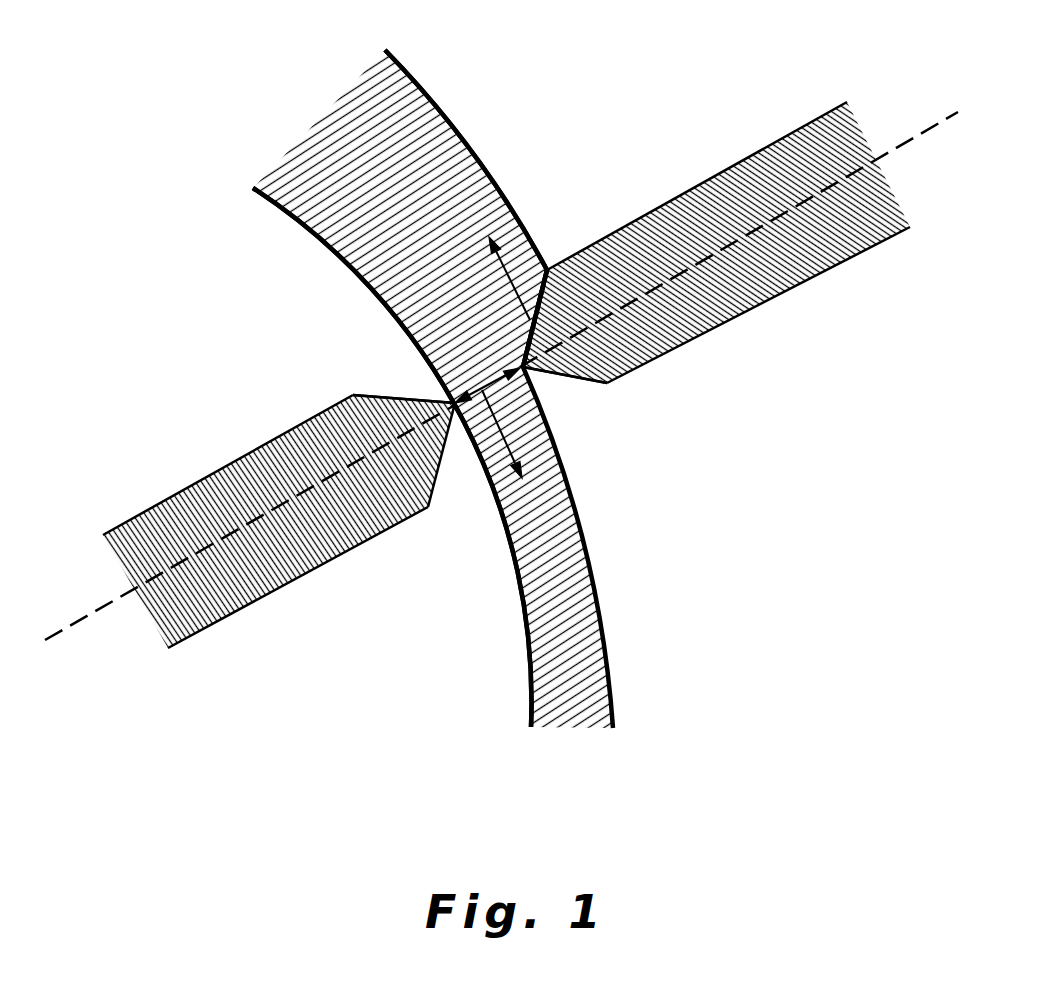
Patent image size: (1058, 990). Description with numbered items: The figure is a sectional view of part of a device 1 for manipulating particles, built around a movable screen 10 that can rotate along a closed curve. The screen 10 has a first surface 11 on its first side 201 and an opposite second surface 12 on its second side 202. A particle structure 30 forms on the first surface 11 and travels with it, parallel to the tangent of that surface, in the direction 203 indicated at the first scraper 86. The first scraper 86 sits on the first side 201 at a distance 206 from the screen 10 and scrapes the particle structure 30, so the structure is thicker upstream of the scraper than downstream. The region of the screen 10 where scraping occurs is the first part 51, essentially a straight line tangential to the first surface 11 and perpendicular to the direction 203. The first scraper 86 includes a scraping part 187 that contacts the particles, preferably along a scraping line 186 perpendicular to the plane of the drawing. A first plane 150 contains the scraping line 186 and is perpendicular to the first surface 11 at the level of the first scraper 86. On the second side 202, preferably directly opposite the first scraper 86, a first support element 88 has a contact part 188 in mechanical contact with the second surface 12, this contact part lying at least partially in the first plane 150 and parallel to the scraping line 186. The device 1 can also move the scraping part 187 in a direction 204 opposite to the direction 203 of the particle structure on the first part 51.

The device for manipulating particles 1 is at (209, 139).
The screen 10 is at (530, 746).
The first surface 11 is at (555, 676).
The second surface 12 is at (511, 687).
The particle structure 30 is at (450, 130).
The first part of the screen 51 is at (453, 459).
The first scraper 86 is at (827, 243).
The first support element 88 is at (223, 595).
The first plane 150 is at (745, 235).
The scraping line 186 is at (525, 368).
The scraping part 187 is at (497, 341).
The contact part 188 is at (439, 399).
The first side 201 is at (720, 516).
The second side 202 is at (437, 622).
The direction of movement of the particle structure 203 is at (508, 440).
The direction of motion of the scraping part 204 is at (505, 265).
The distance 206 is at (505, 373).